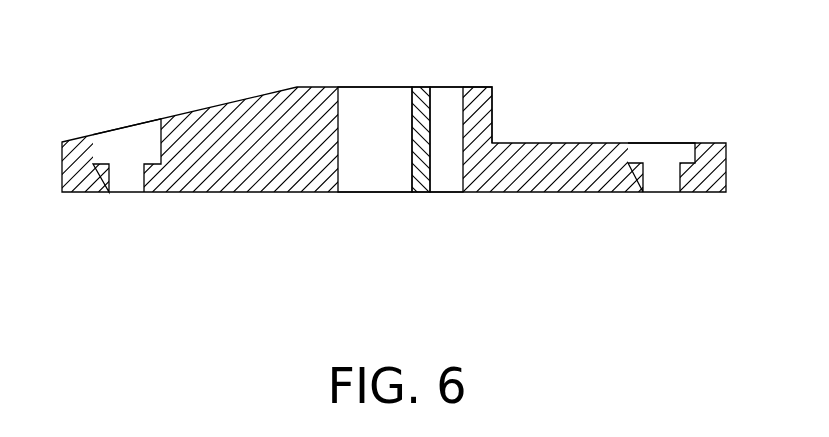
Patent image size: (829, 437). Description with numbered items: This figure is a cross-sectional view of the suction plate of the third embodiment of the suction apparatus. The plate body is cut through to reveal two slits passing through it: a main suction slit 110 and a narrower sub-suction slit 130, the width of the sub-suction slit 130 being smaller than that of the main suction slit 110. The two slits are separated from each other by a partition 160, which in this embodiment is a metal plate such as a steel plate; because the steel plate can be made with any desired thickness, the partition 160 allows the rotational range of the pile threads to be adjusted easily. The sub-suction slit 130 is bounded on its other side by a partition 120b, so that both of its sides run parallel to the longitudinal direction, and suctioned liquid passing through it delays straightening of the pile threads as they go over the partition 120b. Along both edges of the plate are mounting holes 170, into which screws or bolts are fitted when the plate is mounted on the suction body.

The main suction slit 110 is at (364, 119).
The sub-suction slit 130 is at (436, 115).
The partition 160 is at (421, 188).
The partition 120b is at (488, 105).
The mounting holes 170 is at (125, 148).